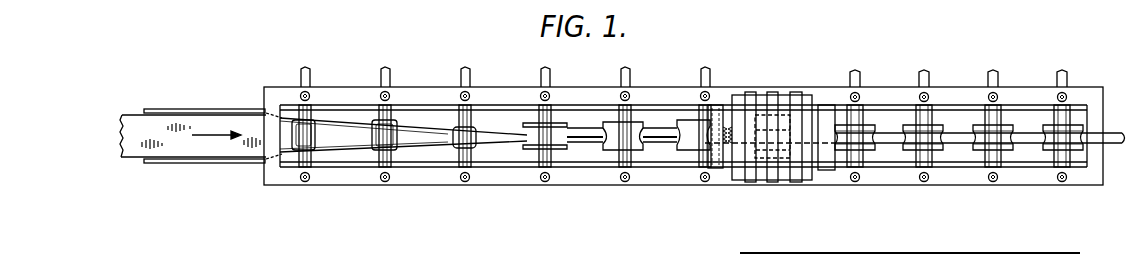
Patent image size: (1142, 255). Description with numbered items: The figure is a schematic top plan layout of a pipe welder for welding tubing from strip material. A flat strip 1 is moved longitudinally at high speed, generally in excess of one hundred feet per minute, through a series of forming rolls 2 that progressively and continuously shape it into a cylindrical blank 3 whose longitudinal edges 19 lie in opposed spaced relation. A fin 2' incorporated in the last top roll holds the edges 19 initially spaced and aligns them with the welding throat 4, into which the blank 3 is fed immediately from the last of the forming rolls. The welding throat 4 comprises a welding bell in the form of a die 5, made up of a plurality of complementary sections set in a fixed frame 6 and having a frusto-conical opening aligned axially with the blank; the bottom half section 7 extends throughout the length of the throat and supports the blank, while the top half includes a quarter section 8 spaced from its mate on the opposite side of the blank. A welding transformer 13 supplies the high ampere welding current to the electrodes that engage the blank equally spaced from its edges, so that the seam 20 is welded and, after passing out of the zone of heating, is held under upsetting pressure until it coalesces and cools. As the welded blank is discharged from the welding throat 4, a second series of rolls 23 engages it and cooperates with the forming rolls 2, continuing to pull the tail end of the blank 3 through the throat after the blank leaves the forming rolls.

The flat strip 1 is at (140, 148).
The forming rolls 2 is at (501, 162).
The fin 2' is at (680, 161).
The cylindrical blank 3 is at (653, 127).
The welding throat 4 is at (763, 147).
The die 5 is at (782, 155).
The fixed frame 6 is at (703, 84).
The bottom half section 7 is at (762, 84).
The quarter section 8 is at (793, 84).
The welding transformer 13 is at (804, 103).
The longitudinal edges 19 is at (673, 127).
The seam 20 is at (958, 137).
The second series of rolls 23 is at (913, 144).